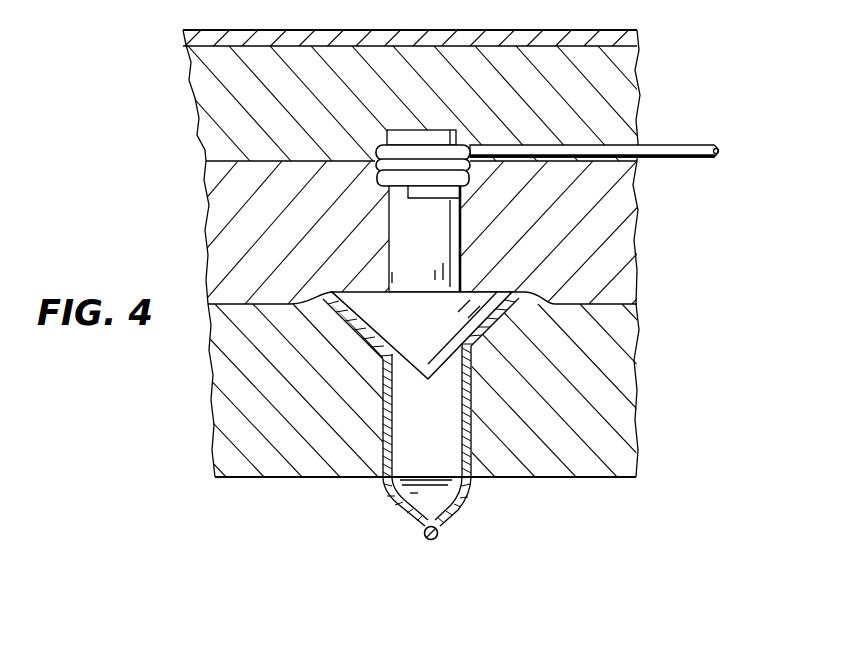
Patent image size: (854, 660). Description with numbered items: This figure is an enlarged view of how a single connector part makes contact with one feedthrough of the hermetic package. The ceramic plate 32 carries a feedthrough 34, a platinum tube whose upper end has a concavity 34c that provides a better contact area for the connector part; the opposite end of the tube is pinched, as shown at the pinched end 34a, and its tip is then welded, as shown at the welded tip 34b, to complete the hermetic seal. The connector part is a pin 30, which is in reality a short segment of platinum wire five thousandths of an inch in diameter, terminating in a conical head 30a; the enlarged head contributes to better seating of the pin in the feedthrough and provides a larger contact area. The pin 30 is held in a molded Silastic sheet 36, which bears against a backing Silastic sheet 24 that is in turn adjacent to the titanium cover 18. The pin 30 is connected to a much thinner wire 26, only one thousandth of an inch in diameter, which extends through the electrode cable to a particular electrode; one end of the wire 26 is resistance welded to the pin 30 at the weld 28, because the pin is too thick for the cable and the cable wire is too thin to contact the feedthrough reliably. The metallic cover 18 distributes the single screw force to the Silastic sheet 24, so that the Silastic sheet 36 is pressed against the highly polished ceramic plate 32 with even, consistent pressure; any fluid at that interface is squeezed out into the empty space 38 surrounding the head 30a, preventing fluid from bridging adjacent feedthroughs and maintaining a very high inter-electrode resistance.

The titanium cover 18 is at (636, 37).
The Silastic sheet 24 is at (614, 98).
The wire 26 is at (706, 146).
The resistance weld 28 is at (412, 152).
The platinum wire pin 30 is at (437, 246).
The conical head 30a is at (481, 317).
The ceramic plate 32 is at (608, 363).
The feedthrough 34 is at (473, 433).
The pinched end 34a is at (458, 517).
The welded tip 34b is at (427, 540).
The concavity 34c is at (488, 337).
The molded Silastic sheet 36 is at (613, 259).
The empty space 38 is at (520, 290).